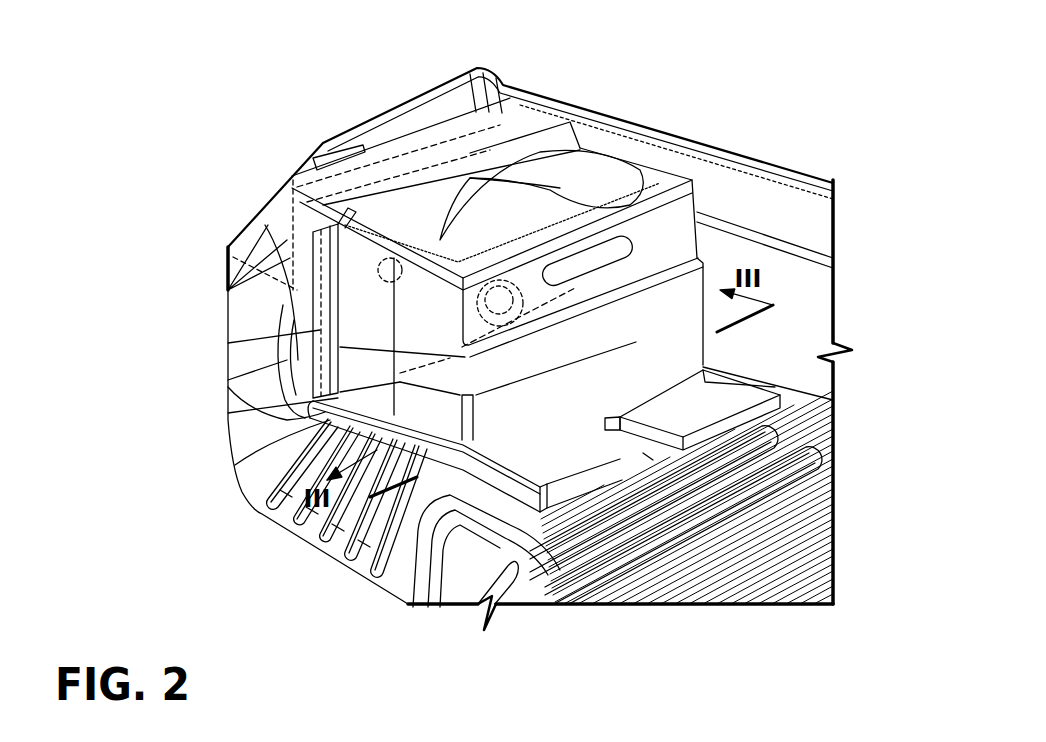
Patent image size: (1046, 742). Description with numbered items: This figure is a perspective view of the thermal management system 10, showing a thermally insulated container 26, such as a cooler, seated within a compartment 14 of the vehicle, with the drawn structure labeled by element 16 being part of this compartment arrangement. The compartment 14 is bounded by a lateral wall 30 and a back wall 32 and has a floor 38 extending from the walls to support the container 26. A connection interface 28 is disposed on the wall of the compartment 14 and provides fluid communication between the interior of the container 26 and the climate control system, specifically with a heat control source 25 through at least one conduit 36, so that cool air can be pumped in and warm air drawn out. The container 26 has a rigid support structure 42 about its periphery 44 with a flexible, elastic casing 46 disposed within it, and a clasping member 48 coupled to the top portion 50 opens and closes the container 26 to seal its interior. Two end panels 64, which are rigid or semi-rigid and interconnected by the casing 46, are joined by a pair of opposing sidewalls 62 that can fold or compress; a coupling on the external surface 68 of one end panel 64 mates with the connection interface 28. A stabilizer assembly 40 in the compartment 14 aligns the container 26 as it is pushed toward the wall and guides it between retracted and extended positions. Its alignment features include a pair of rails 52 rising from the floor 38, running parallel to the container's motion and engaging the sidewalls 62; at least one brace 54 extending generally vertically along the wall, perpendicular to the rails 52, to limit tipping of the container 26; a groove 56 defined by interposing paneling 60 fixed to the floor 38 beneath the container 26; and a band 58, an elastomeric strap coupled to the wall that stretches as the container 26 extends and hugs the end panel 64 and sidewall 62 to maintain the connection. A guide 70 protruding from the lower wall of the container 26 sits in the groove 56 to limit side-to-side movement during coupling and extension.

The thermal management system 10 is at (405, 120).
The compartment 14 is at (795, 162).
The base wall 16 is at (805, 407).
The heat control source 25 is at (470, 103).
The thermally insulated container 26 is at (670, 205).
The connection interface 28 is at (578, 283).
The lateral wall 30 is at (440, 110).
The back wall 32 is at (806, 315).
The conduit 36 is at (227, 250).
The floor 38 is at (735, 515).
The stabilizer assembly 40 is at (372, 451).
The rigid support structure 42 is at (482, 432).
The periphery 44 is at (697, 217).
The casing 46 is at (683, 165).
The clasping member 48 is at (652, 178).
The top portion 50 is at (425, 188).
The rails 52 is at (768, 372).
The brace 54 is at (313, 333).
The groove 56 is at (612, 445).
The band 58 is at (395, 545).
The interposing paneling 60 is at (607, 443).
The sidewall 62 is at (405, 397).
The end panels 64 is at (518, 268).
The external surface 68 is at (715, 335).
The guide 70 is at (516, 357).